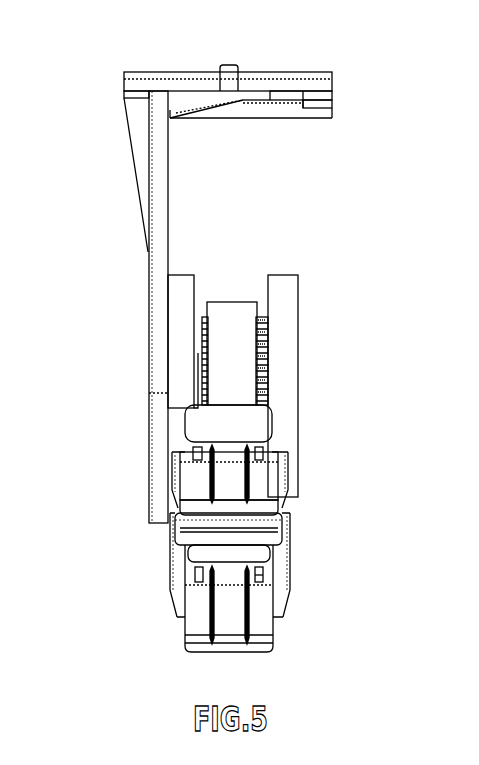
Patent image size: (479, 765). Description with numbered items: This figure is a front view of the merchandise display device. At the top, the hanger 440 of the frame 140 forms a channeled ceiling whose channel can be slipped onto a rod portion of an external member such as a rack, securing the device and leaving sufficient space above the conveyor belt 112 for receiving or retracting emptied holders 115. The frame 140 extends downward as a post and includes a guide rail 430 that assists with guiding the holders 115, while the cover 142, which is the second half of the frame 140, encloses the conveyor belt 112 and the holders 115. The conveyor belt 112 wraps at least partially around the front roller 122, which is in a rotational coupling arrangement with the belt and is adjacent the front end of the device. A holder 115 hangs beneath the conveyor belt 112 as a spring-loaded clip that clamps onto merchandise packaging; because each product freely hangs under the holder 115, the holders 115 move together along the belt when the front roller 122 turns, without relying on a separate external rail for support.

The back hanger 440 is at (283, 95).
The frame 140 is at (168, 205).
The guide rail 430 is at (180, 350).
The cover 142 is at (287, 302).
The conveyor belt 112 is at (223, 308).
The front roller 122 is at (263, 340).
The holder 115 is at (263, 623).